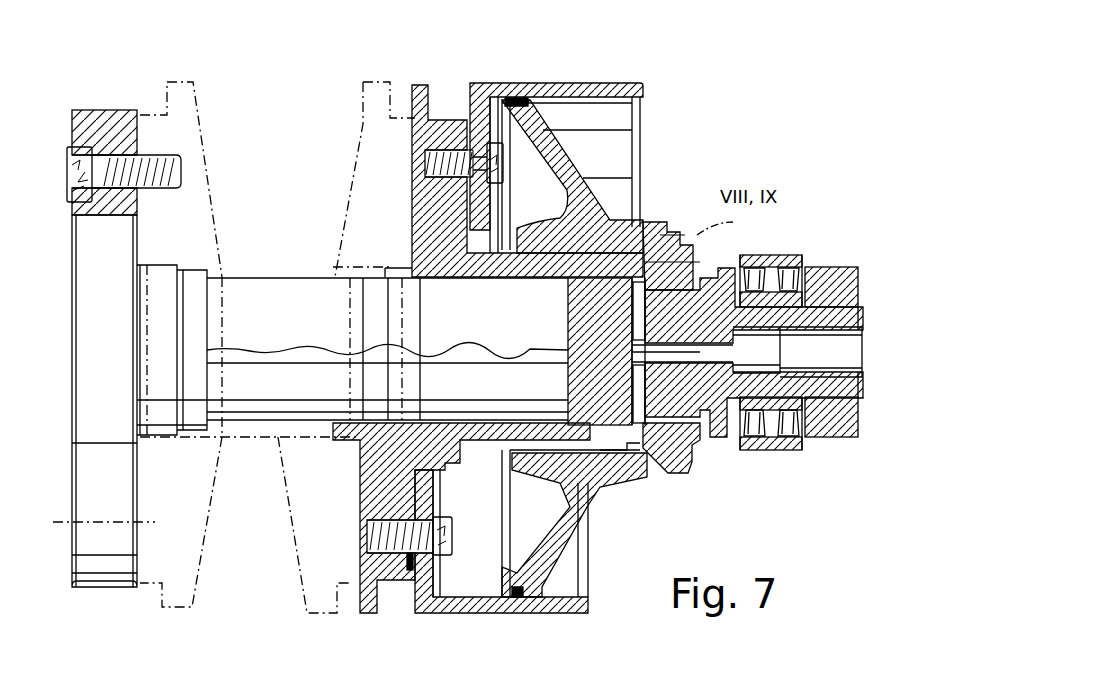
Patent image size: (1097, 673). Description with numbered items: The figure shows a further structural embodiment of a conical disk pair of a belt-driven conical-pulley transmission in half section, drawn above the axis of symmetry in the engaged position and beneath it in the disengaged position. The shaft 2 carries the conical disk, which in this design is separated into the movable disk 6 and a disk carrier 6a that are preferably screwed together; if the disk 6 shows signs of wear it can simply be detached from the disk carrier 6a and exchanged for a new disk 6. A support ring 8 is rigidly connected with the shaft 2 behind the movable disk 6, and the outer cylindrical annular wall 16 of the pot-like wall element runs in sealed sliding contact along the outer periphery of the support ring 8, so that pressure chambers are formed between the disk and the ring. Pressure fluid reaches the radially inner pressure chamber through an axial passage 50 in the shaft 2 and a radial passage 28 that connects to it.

The shaft 2 is at (273, 297).
The movable disk 6 is at (368, 110).
The disk carrier 6a is at (443, 125).
The support ring 8 is at (592, 228).
The outer annular wall 16 is at (598, 95).
The radial passage 28 is at (672, 473).
The axial passage 50 is at (705, 353).